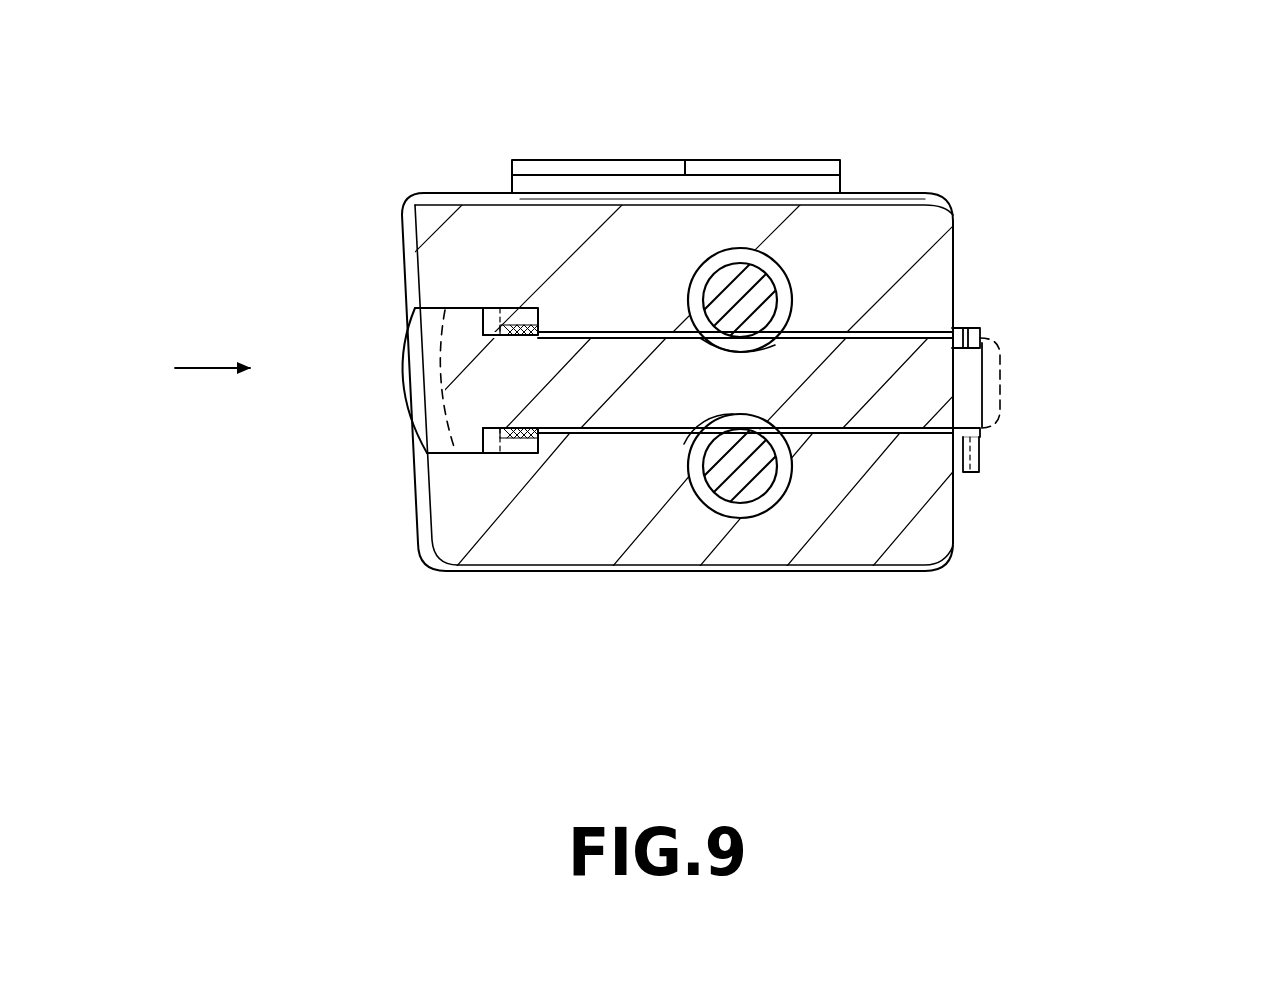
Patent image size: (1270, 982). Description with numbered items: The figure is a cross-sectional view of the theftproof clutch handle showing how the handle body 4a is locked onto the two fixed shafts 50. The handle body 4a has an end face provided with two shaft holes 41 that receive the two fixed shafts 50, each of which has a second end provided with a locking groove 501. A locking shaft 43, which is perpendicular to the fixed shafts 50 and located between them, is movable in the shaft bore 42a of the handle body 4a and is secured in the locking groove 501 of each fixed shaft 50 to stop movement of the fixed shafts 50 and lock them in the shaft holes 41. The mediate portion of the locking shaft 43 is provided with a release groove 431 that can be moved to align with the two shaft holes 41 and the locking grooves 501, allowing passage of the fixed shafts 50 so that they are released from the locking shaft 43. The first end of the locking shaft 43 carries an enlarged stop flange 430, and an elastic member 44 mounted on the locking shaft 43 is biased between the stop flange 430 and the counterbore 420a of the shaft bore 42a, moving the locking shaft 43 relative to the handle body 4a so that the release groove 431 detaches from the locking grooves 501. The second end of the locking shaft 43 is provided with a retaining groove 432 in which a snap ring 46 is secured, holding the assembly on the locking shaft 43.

The handle body 4a is at (690, 538).
The shaft hole 41 is at (793, 297).
The shaft bore 42a is at (633, 330).
The counterbore 420a is at (420, 307).
The locking shaft 43 is at (440, 553).
The stop flange 430 is at (430, 370).
The release groove 431 is at (695, 340).
The retaining groove 432 is at (977, 437).
The elastic member 44 is at (518, 327).
The snap ring 46 is at (975, 453).
The fixed shaft 50 is at (740, 256).
The locking groove 501 is at (778, 268).